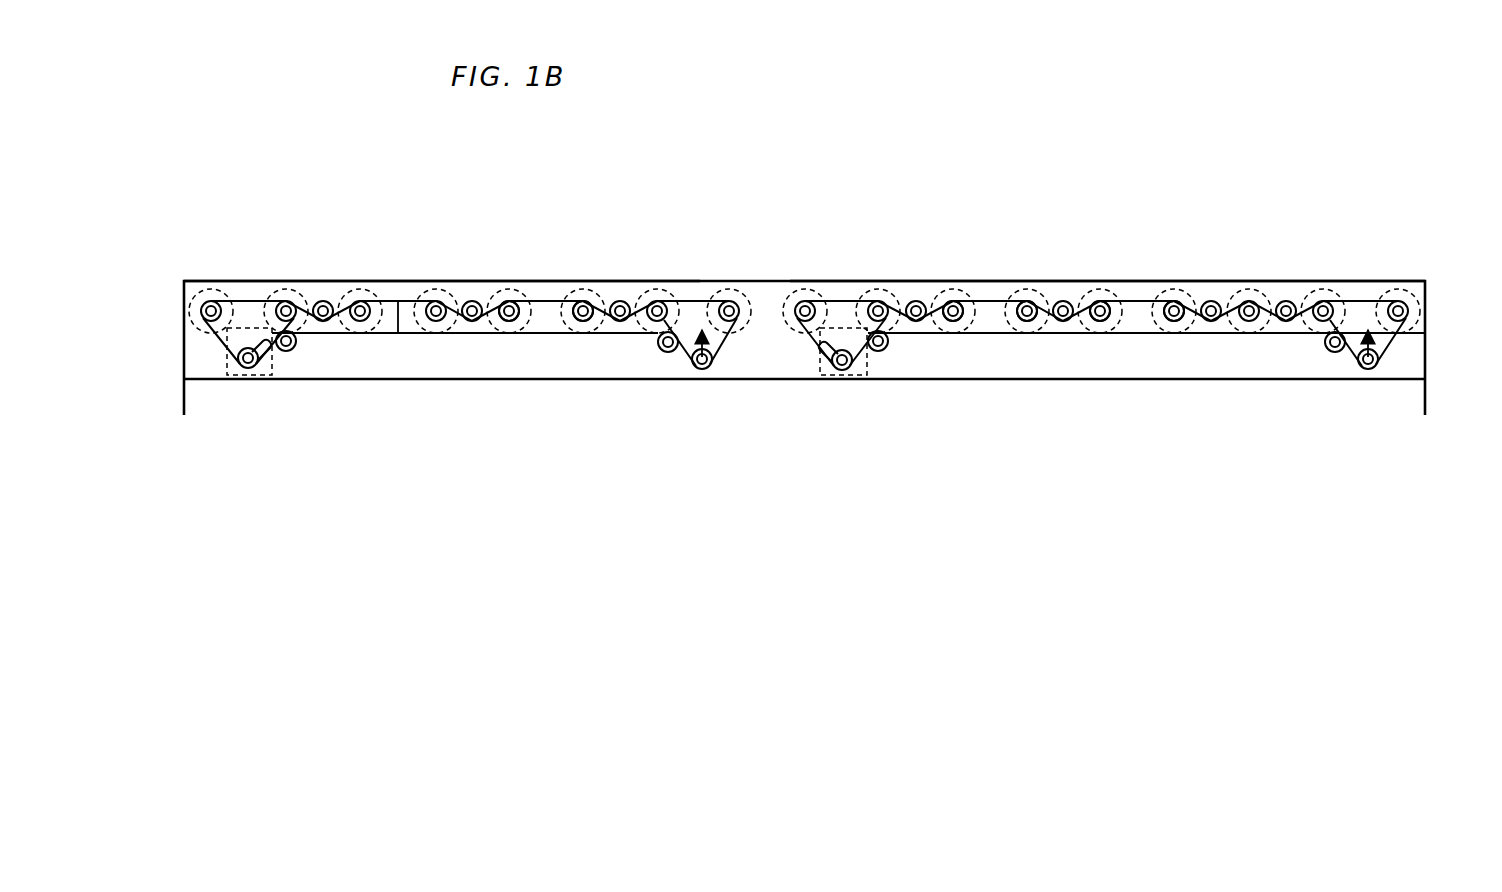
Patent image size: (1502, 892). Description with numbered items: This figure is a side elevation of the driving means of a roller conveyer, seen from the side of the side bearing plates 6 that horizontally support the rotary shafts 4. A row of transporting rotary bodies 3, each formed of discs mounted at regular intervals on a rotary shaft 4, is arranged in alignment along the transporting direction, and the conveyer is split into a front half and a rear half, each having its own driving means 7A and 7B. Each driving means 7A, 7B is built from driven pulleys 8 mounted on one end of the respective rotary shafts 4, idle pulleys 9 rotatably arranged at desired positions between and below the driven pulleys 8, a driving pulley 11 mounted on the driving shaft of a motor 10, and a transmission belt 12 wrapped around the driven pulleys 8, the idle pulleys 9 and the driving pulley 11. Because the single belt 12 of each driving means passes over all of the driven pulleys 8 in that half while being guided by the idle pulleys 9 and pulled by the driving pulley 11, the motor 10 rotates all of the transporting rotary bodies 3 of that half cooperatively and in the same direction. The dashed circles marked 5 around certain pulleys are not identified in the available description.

The transporting rotary body 3 is at (496, 283).
The rotary shaft 4 is at (286, 301).
The roller unit zone 5 is at (436, 291).
The side bearing plate 6 is at (695, 280).
The driving means 7A is at (793, 272).
The driving means 7B is at (200, 272).
The driven pulley 8 is at (583, 322).
The idle pulley 9 is at (323, 301).
The motor 10 is at (227, 352).
The driving pulley 11 is at (262, 355).
The transmission belt 12 is at (462, 334).